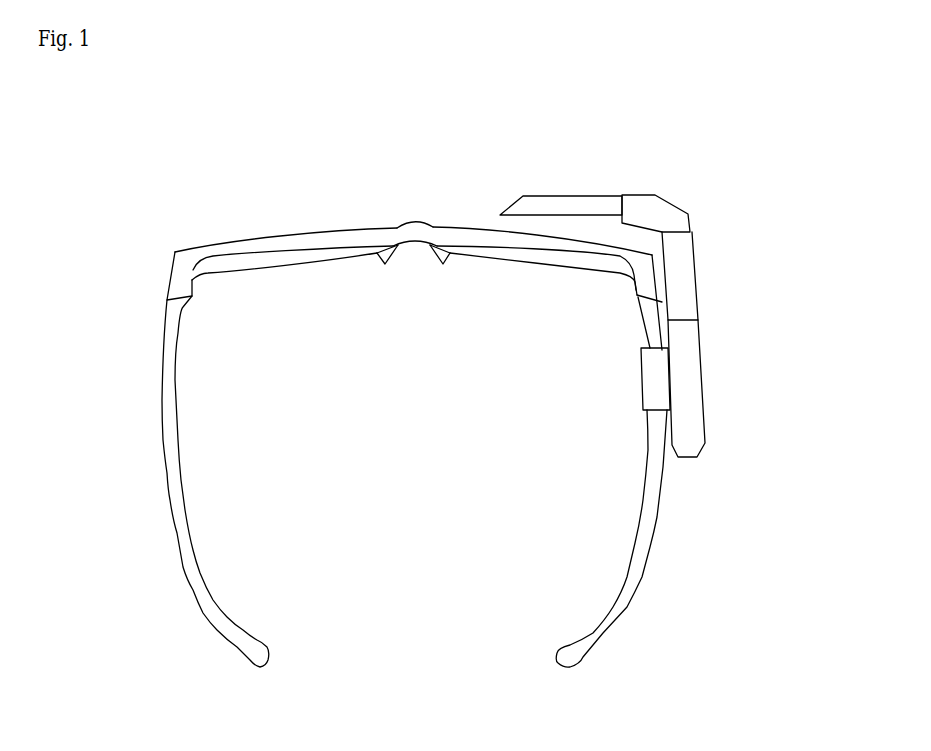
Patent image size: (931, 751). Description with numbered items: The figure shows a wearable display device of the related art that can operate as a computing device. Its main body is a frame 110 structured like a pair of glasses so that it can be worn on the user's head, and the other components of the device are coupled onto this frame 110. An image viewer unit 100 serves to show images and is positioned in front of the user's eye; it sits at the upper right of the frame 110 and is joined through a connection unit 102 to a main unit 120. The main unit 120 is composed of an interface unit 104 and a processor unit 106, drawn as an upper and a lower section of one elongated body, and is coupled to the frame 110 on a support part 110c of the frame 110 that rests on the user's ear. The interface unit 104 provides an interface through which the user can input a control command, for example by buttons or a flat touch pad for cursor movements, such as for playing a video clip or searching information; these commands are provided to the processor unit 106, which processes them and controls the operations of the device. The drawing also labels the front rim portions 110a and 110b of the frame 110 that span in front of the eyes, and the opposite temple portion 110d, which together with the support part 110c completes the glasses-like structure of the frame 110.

The image viewer unit 100 is at (567, 200).
The connection unit 102 is at (682, 215).
The interface unit 104 is at (696, 280).
The processor unit 106 is at (701, 345).
The main unit 120 is at (768, 344).
The frame 110 is at (416, 444).
The right rim portion of frame 110a is at (533, 267).
The left rim portion of frame 110b is at (305, 267).
The support part 110c is at (637, 563).
The left temple 110d is at (177, 478).